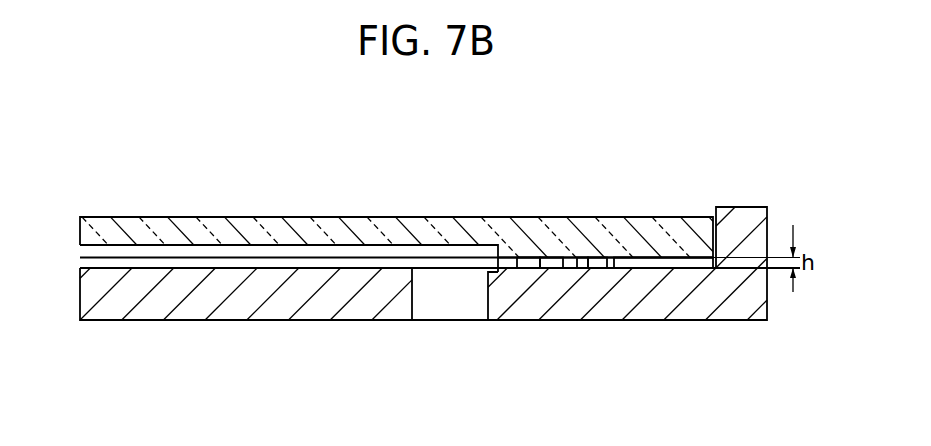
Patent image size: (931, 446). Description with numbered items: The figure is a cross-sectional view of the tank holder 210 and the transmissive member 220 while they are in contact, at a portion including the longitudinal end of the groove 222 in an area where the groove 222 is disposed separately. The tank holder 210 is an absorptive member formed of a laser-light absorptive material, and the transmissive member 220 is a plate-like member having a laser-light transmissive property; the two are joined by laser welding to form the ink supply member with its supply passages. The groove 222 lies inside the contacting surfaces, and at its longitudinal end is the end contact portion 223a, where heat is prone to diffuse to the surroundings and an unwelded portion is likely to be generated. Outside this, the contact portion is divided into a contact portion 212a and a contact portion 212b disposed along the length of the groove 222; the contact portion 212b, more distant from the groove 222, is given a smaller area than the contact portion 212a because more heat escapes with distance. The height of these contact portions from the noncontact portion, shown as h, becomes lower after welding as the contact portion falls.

The tank holder 210 is at (573, 313).
The contact portion 212a is at (570, 258).
The contact portion 212b is at (614, 258).
The transmissive member 220 is at (142, 227).
The groove 222 is at (268, 250).
The end contact portion 223a is at (505, 258).